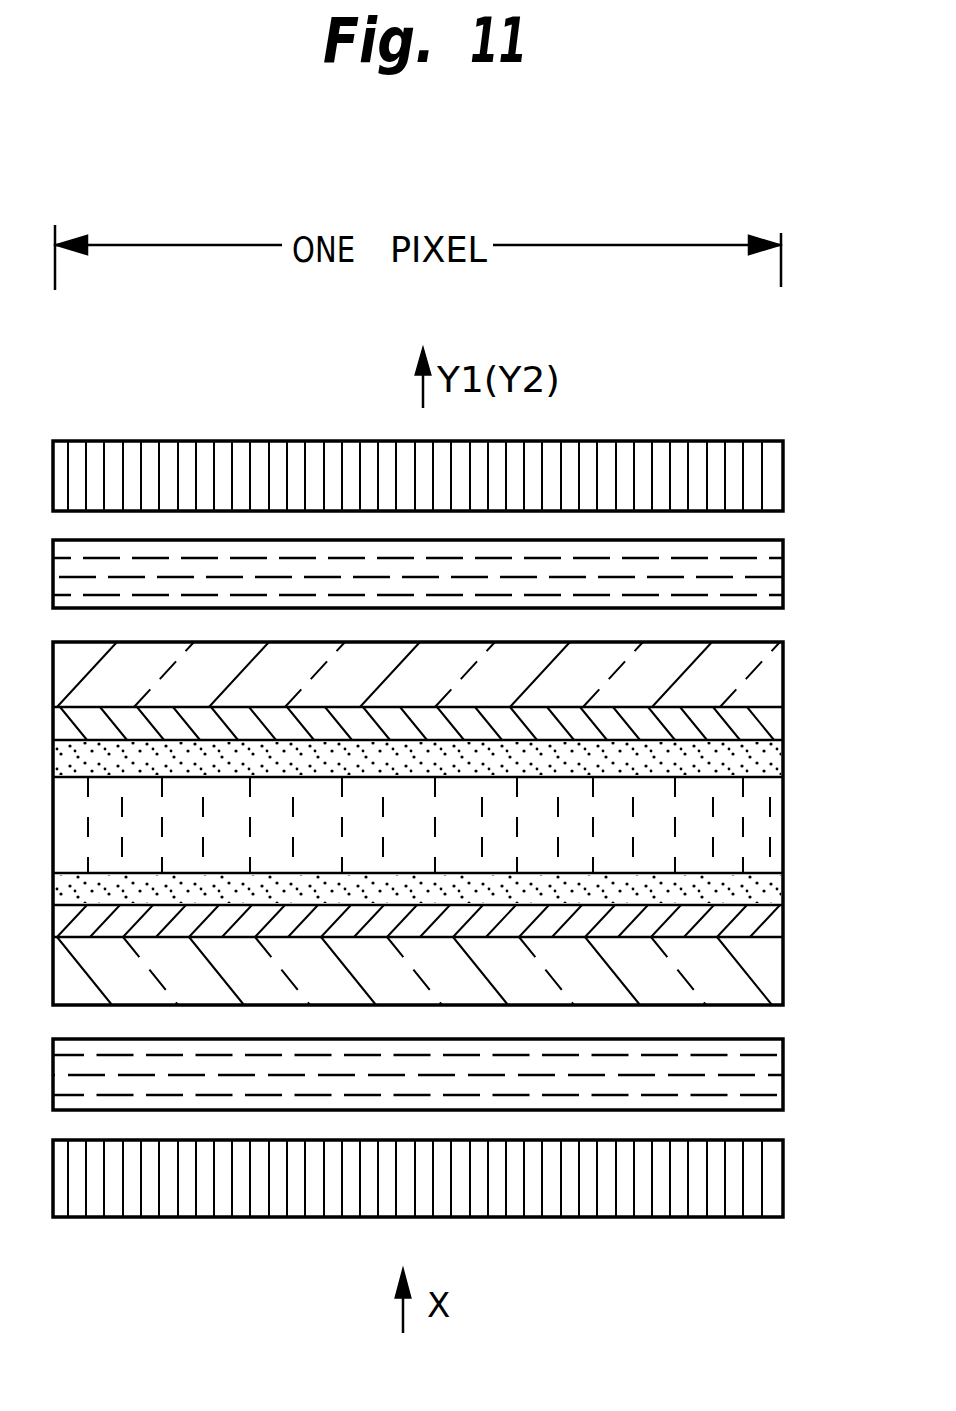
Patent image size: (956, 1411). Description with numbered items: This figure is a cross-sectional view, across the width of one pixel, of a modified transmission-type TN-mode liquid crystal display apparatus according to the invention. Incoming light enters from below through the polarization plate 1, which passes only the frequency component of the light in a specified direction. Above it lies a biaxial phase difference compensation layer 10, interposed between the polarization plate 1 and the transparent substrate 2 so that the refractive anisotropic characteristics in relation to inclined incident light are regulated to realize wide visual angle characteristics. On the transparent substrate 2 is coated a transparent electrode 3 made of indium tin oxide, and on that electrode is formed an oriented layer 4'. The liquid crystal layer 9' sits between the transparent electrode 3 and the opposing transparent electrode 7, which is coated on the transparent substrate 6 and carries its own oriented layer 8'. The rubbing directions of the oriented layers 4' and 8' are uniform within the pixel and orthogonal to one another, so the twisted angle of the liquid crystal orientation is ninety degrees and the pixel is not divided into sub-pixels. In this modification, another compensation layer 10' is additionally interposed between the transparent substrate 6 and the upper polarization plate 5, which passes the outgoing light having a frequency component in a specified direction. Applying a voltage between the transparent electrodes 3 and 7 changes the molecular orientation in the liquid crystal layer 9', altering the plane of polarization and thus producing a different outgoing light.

The polarization plate 1 is at (765, 1183).
The transparent substrate 2 is at (770, 985).
The transparent electrode 3 is at (772, 930).
The oriented layer 4' is at (453, 905).
The polarization plate 5 is at (768, 485).
The transparent substrate 6 is at (775, 682).
The transparent electrode 7 is at (775, 733).
The oriented layer 8' is at (453, 777).
The liquid crystal layer 9' is at (453, 825).
The biaxial phase difference compensation layer 10 is at (459, 1081).
The compensation layer 10' is at (463, 582).